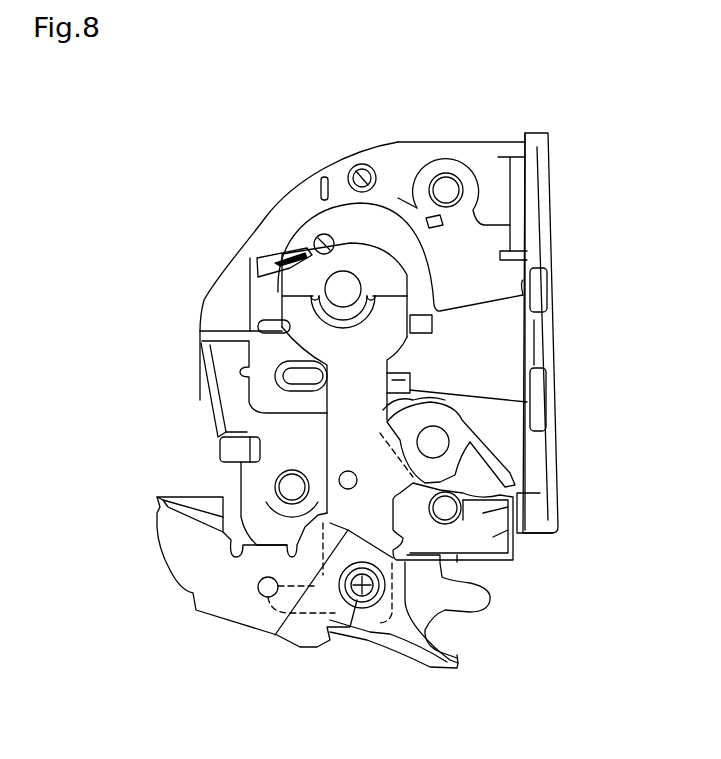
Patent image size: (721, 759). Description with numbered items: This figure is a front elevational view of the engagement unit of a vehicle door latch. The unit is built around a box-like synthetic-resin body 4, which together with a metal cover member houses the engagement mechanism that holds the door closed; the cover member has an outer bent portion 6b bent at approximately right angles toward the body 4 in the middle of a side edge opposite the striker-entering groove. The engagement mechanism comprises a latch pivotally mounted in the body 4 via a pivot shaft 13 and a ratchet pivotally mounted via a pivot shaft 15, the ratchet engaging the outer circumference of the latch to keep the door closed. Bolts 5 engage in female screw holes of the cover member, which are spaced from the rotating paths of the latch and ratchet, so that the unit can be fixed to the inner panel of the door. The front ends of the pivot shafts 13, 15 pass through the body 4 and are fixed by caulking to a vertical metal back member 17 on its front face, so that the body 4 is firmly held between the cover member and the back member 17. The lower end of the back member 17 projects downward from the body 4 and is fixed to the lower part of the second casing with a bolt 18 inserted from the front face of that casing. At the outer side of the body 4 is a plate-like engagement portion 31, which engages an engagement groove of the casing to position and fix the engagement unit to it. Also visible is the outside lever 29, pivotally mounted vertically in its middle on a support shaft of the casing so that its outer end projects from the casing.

The body 4 is at (436, 140).
The bolts 5 is at (449, 182).
The pivot shaft 13 is at (320, 297).
The back member 17 is at (383, 338).
The outer bent portion 6b is at (212, 410).
The engagement portion 31 is at (225, 452).
The pivot shaft 15 is at (438, 443).
The outside lever 29 is at (210, 615).
The bolt 18 is at (362, 592).